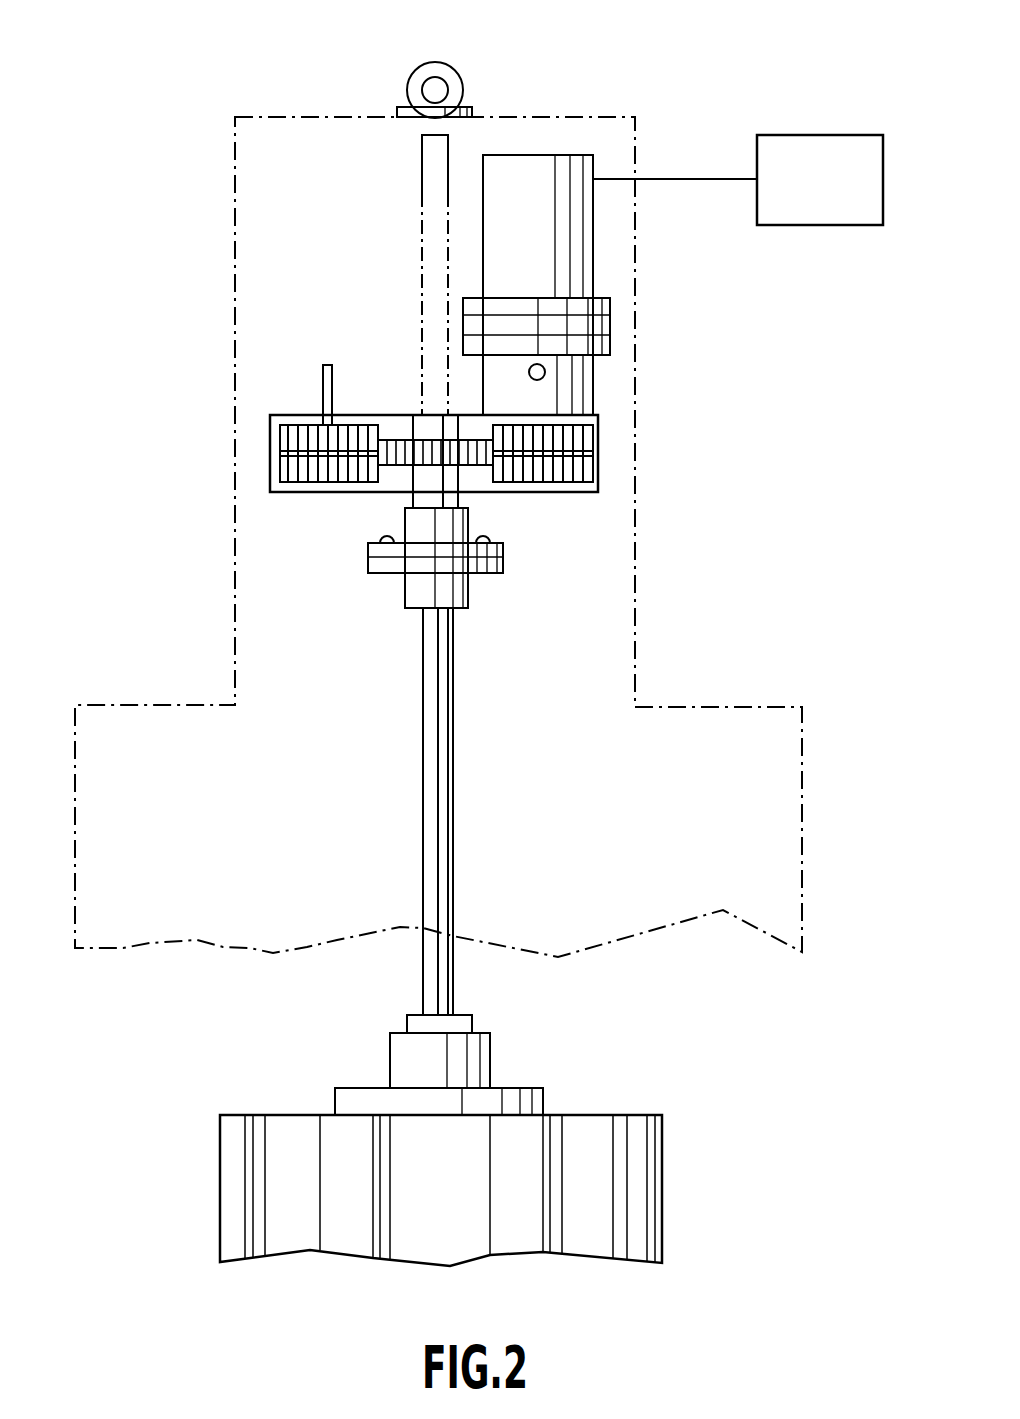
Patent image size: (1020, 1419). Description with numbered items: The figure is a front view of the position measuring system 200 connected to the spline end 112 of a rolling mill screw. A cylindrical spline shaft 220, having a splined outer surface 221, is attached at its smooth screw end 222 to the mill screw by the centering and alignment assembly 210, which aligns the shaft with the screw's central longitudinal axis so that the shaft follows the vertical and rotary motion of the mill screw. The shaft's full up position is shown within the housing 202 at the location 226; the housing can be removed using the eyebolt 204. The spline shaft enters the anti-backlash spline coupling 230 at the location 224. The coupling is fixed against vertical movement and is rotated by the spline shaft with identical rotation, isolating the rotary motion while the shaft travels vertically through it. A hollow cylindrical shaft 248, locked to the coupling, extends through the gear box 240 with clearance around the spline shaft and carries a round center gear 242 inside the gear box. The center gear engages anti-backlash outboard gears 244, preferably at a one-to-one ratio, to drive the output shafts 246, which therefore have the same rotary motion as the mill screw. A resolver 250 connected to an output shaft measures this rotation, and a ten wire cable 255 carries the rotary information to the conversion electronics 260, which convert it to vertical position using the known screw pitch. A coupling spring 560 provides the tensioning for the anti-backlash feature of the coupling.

The spline end 112 is at (662, 1233).
The position measuring system 200 is at (122, 604).
The housing 202 is at (235, 300).
The eyebolt 204 is at (428, 63).
The centering and alignment assembly 210 is at (538, 1058).
The spline shaft 220 is at (453, 835).
The splined outer surface 221 is at (430, 780).
The screw end 222 is at (455, 1003).
The location where spline shaft enters anti-backlash spline coupling 224 is at (453, 617).
The full up position of spline shaft 226 is at (420, 213).
The anti-backlash spline coupling 230 is at (532, 554).
The gear box 240 is at (598, 448).
The center gear 242 is at (405, 440).
The anti-backlash outboard gears 244 is at (283, 468).
The output shafts 246 is at (322, 380).
The hollow cylindrical shaft 248 is at (460, 497).
The resolver 250 is at (530, 153).
The ten wire cable 255 is at (707, 178).
The conversion electronics 260 is at (800, 135).
The coupling spring 560 is at (388, 540).